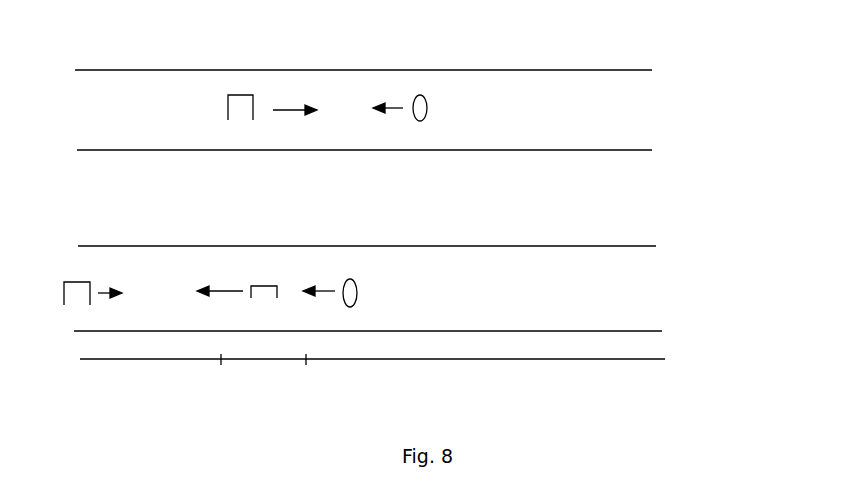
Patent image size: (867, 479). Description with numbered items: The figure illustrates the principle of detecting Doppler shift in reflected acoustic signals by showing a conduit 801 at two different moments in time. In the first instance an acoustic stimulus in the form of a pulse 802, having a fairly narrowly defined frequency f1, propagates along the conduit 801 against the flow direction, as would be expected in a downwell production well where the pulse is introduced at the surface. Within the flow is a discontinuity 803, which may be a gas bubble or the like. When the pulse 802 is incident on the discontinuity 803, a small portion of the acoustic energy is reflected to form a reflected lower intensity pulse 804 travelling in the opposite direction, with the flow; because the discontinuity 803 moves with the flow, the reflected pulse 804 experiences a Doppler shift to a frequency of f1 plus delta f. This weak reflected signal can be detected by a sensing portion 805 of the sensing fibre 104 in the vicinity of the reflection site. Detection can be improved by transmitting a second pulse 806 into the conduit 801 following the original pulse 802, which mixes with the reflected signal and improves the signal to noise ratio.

The conduit 801 is at (553, 152).
The pulse 802 is at (227, 102).
The discontinuity 803 is at (422, 121).
The reflected lower intensity pulse 804 is at (277, 294).
The sensing portion 805 is at (263, 371).
The second pulse 806 is at (87, 283).
The sensing fibre 104 is at (577, 359).